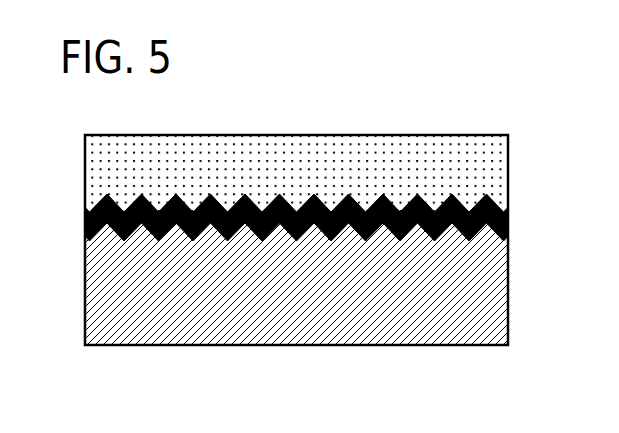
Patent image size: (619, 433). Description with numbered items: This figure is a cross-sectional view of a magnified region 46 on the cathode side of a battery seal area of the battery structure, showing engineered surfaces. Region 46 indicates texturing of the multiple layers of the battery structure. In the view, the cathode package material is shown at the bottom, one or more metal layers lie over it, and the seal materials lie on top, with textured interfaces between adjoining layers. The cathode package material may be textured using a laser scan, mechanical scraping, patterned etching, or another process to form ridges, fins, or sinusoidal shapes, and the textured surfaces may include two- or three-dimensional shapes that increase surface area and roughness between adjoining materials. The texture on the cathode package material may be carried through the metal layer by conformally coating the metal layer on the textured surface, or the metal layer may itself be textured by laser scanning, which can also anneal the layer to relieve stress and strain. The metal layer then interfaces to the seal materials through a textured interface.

The region 46 is at (430, 121).